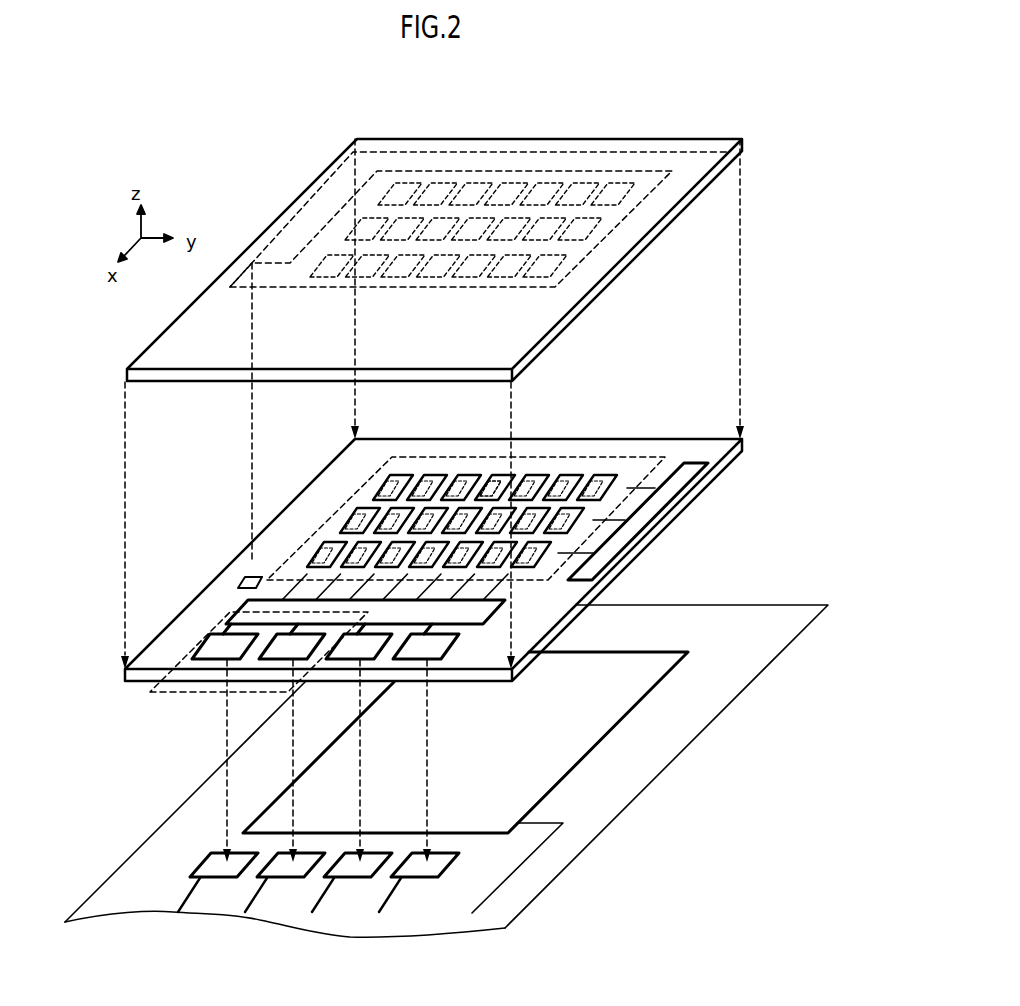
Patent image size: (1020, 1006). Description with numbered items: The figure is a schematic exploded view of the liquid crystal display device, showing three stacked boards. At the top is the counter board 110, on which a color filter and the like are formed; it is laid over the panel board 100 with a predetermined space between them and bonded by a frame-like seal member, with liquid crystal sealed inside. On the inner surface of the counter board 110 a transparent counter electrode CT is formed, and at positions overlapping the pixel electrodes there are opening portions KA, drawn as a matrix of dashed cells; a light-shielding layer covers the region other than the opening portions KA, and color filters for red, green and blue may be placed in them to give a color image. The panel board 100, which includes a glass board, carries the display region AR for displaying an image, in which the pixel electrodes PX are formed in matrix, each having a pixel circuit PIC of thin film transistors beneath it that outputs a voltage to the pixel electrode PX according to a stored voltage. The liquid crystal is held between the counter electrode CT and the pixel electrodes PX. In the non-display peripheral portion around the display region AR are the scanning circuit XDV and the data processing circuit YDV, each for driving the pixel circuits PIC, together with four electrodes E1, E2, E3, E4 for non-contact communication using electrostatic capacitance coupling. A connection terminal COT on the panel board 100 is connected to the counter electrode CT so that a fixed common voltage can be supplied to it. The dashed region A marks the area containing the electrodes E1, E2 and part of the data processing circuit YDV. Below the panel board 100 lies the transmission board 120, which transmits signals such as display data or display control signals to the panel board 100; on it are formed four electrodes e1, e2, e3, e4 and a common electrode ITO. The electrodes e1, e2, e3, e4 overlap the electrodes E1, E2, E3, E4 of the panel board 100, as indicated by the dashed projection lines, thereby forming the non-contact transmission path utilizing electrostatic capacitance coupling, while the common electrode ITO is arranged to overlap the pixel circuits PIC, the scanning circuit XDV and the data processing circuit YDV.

The counter board 110 is at (730, 160).
The opening portions KA is at (615, 194).
The counter electrode CT is at (603, 242).
The display region AR is at (630, 463).
The pixel circuit PIC is at (490, 477).
The pixel electrodes PX is at (535, 477).
The panel board 100 is at (713, 487).
The scanning circuit XDV is at (610, 567).
The connection terminal COT is at (251, 576).
The data processing circuit YDV is at (247, 600).
The region A is at (150, 692).
The electrode E1 is at (222, 650).
The electrode E2 is at (290, 650).
The electrode E3 is at (357, 650).
The electrode E4 is at (423, 650).
The common electrode ITO is at (625, 698).
The transmission board 120 is at (643, 773).
The electrode e1 is at (237, 867).
The electrode e2 is at (302, 867).
The electrode e3 is at (368, 867).
The electrode e4 is at (432, 867).